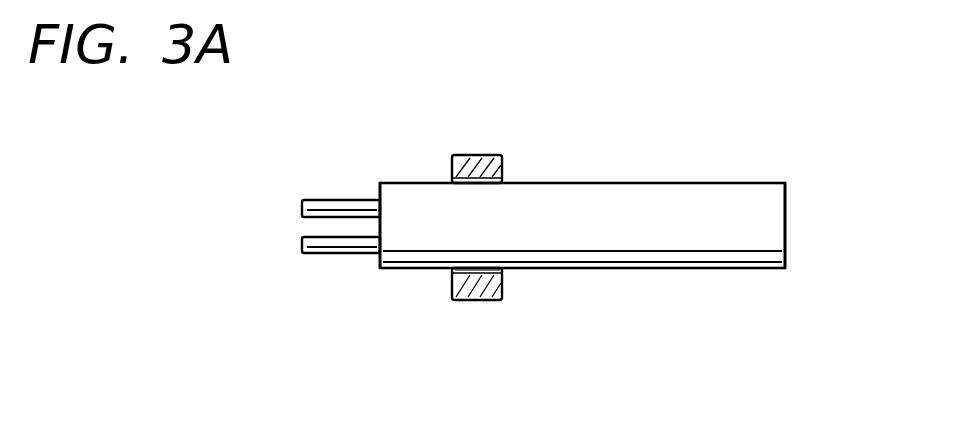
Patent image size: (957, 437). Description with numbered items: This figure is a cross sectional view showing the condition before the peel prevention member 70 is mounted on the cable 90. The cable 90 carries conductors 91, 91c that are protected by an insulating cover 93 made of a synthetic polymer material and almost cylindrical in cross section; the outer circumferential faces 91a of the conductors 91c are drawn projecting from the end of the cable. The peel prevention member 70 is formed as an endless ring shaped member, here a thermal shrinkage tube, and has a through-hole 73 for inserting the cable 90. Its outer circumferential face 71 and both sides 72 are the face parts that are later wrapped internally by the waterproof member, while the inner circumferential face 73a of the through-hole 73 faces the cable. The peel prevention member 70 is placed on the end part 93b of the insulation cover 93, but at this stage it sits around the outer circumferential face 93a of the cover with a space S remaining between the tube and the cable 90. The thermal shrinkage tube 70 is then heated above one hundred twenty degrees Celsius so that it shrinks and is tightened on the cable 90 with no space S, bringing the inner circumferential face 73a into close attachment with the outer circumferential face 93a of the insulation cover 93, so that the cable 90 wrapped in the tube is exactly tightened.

The peel prevention member 70 is at (500, 153).
The outer circumferential face 71 is at (465, 300).
The both sides 72 is at (453, 278).
The through-hole 73 is at (503, 271).
The inner circumferential face 73a is at (503, 182).
The cable 90 is at (698, 183).
The conductors 91 is at (316, 200).
The outer circumferential faces 91a is at (362, 200).
The conductors 91c is at (320, 253).
The insulating cover 93 is at (675, 269).
The outer circumferential face 93a is at (745, 269).
The end part 93b is at (403, 183).
The space S is at (452, 178).